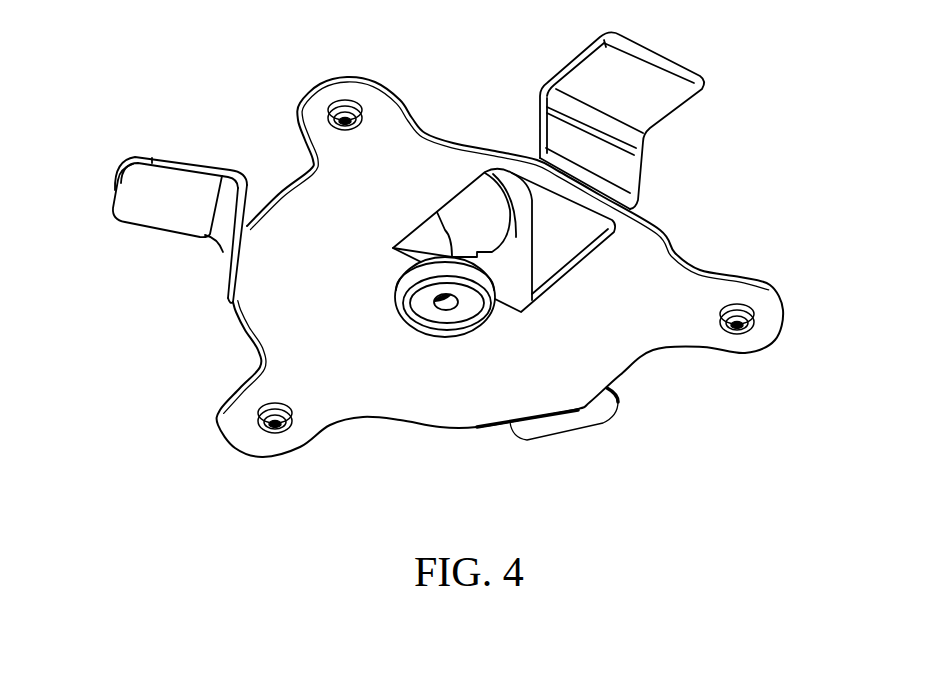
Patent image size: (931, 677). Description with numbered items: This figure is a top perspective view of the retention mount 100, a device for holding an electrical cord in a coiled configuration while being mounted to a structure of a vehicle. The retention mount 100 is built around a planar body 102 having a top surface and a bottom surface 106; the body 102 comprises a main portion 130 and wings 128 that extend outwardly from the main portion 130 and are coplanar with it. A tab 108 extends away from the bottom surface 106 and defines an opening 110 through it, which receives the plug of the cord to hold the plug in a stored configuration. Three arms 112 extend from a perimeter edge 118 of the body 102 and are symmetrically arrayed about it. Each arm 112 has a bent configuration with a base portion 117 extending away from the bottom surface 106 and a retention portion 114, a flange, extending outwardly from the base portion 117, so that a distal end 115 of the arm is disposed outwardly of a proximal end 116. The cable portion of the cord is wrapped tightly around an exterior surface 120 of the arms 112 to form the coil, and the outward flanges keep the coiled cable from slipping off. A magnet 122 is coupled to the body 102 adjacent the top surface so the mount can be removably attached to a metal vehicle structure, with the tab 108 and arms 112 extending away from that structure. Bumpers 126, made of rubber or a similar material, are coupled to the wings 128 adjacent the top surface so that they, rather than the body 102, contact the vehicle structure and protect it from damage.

The retention mount 100 is at (224, 91).
The body 102 is at (293, 217).
The bottom surface 106 is at (567, 385).
The tab 108 is at (430, 130).
The opening 110 is at (510, 215).
The arms 112 is at (660, 70).
The retention portion 114 is at (138, 172).
The distal end 115 is at (649, 58).
The proximal end 116 is at (546, 150).
The base portion 117 is at (546, 120).
The perimeter edge 118 is at (683, 265).
The exterior surface 120 is at (618, 170).
The magnet 122 is at (420, 313).
The bumpers 126 is at (353, 103).
The wings 128 is at (301, 92).
The main portion 130 is at (375, 387).